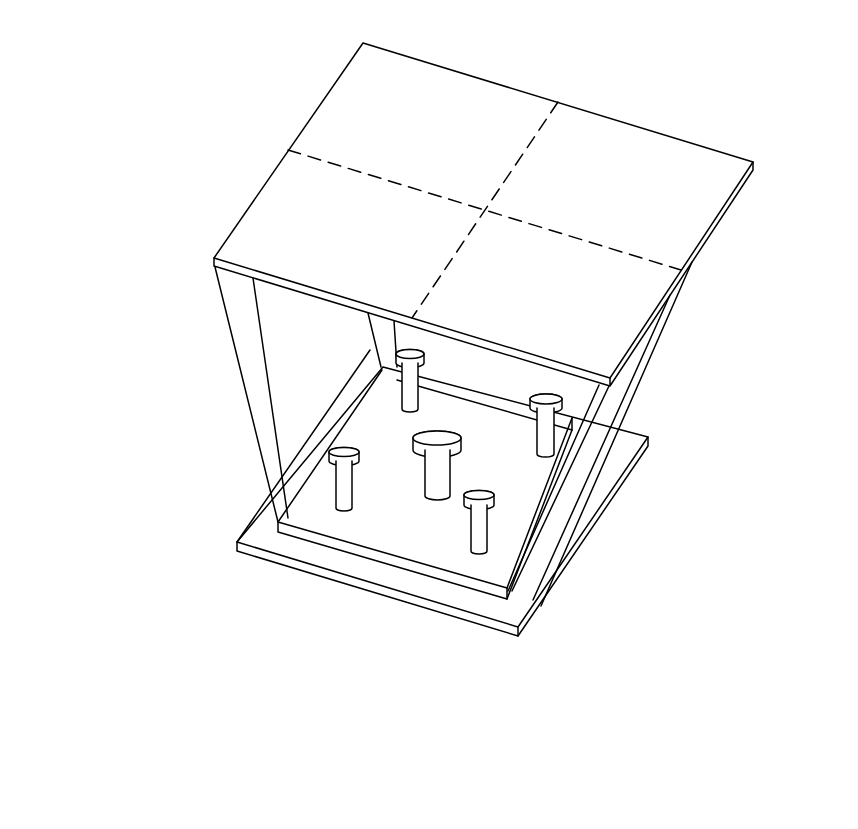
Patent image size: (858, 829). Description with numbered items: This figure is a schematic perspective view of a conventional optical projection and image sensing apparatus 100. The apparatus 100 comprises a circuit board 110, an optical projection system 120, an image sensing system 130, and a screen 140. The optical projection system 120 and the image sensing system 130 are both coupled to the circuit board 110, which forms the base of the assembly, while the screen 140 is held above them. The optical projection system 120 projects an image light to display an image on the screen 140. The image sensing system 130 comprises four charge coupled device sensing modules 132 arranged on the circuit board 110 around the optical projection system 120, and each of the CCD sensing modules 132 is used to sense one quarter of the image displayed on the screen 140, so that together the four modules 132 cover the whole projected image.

The optical projection and image sensing apparatus 100 is at (716, 662).
The circuit board 110 is at (557, 520).
The optical projection system 120 is at (437, 477).
The image sensing system 130 is at (123, 365).
The CCD sensing module 132 is at (408, 390).
The screen 140 is at (642, 335).